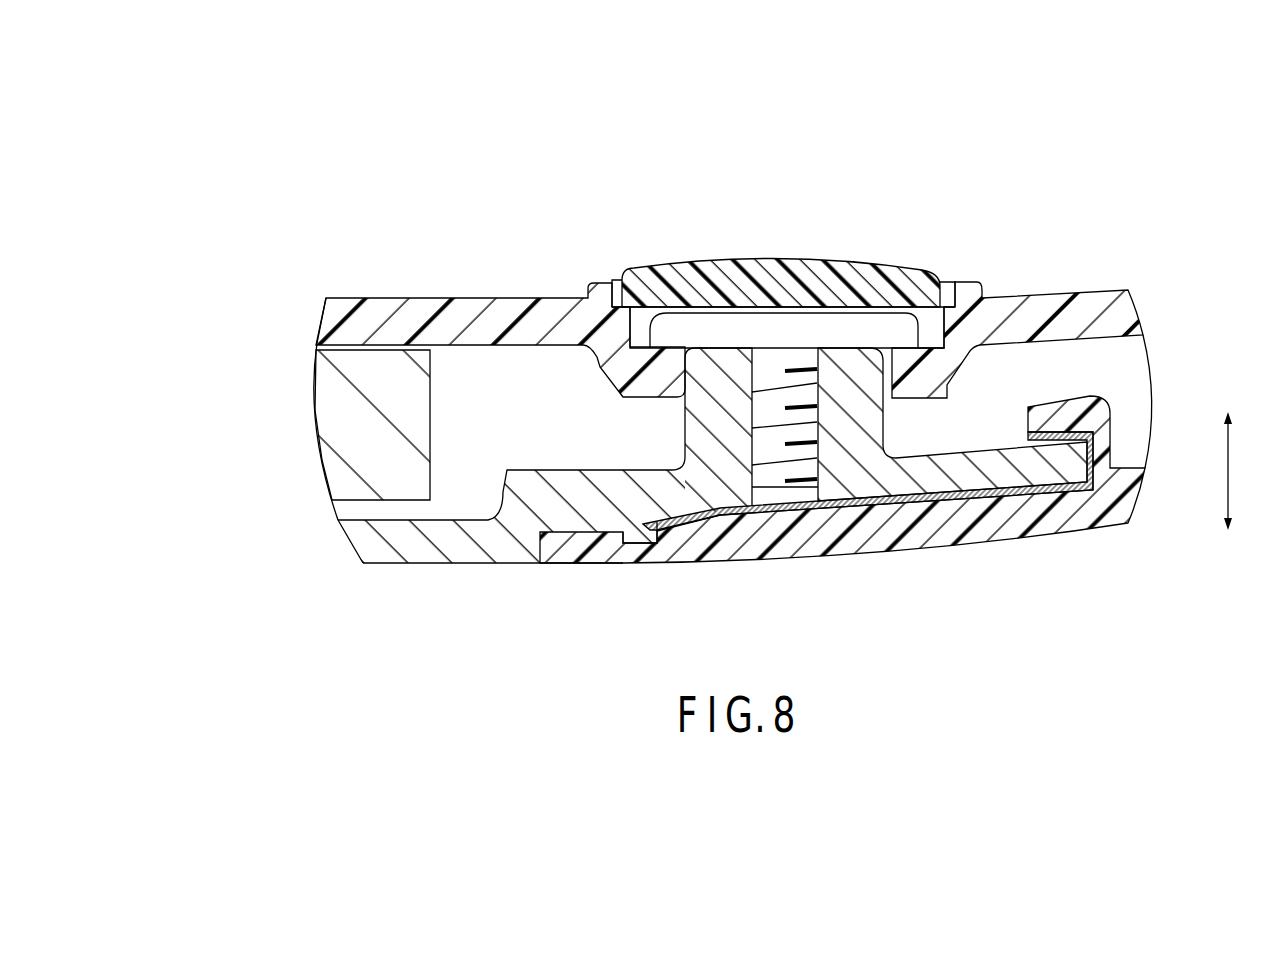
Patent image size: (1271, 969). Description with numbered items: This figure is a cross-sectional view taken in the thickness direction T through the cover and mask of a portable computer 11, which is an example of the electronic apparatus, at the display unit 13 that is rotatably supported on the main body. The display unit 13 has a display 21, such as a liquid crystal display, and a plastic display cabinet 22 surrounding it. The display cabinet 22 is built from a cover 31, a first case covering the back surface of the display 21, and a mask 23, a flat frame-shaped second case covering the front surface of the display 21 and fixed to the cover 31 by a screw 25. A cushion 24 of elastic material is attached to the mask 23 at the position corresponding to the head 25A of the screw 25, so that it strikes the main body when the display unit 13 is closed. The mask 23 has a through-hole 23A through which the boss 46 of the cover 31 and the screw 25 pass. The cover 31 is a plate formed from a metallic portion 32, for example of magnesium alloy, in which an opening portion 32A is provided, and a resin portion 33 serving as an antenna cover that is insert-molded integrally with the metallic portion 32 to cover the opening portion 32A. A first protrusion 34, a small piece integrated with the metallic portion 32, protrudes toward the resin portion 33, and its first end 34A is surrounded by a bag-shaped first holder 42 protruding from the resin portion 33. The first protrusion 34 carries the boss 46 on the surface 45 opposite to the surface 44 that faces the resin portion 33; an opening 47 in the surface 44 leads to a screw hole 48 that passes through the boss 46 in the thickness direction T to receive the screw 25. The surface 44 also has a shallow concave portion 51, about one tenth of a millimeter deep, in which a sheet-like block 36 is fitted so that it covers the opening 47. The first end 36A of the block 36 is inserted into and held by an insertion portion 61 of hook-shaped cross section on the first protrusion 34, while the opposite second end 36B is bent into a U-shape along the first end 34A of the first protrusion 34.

The portable computer 11 is at (1022, 116).
The display unit 13 is at (960, 156).
The display 21 is at (328, 450).
The display cabinet 22 is at (1110, 282).
The mask 23 is at (530, 298).
The through-hole 23A is at (888, 368).
The cushion 24 is at (779, 268).
The screw 25 is at (820, 317).
The head 25A is at (735, 320).
The cover 31 is at (512, 563).
The metallic portion 32 is at (437, 563).
The opening portion 32A is at (1111, 552).
The resin portion 33 is at (925, 551).
The first protrusion 34 is at (990, 434).
The first end 34A is at (1038, 490).
The block 36 is at (857, 507).
The first end 36A is at (674, 530).
The second end 36B is at (1067, 423).
The first holder 42 is at (1107, 420).
The surface 44 is at (904, 497).
The surface 45 is at (943, 457).
The boss 46 is at (686, 350).
The opening 47 is at (769, 507).
The screw hole 48 is at (790, 503).
The concave portion 51 is at (643, 526).
The insertion portion 61 is at (624, 563).